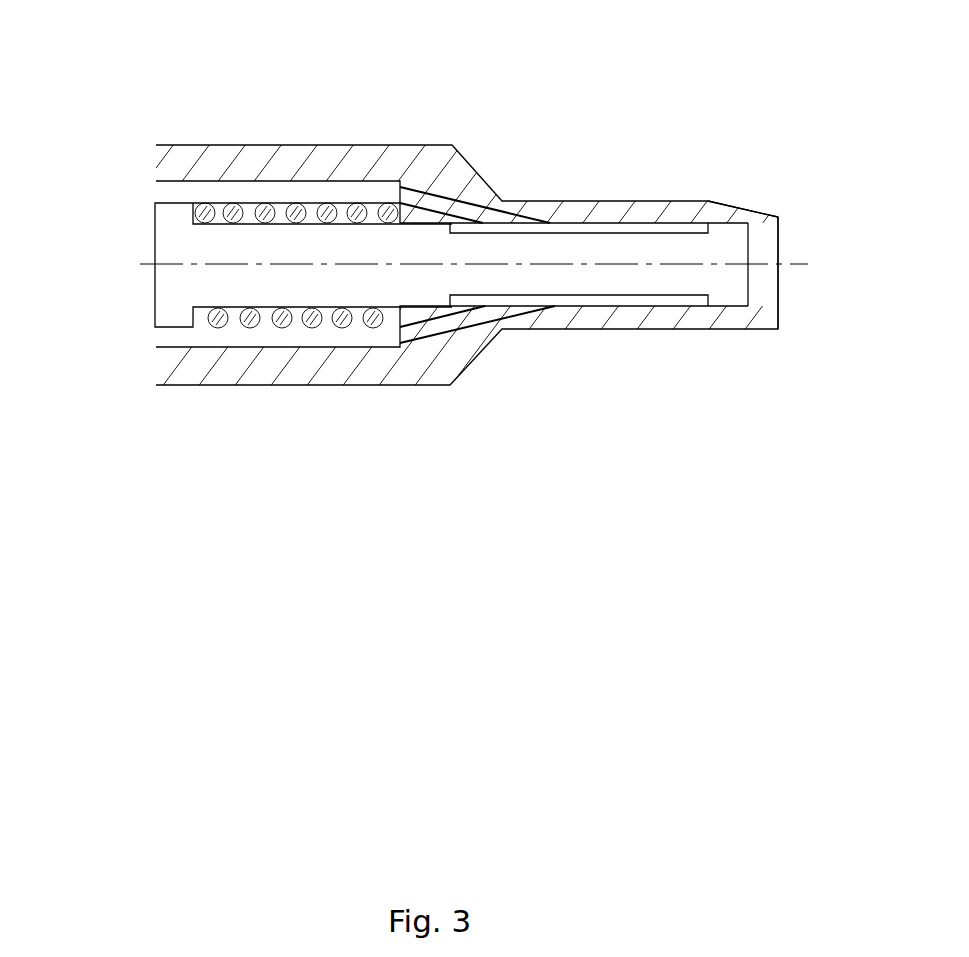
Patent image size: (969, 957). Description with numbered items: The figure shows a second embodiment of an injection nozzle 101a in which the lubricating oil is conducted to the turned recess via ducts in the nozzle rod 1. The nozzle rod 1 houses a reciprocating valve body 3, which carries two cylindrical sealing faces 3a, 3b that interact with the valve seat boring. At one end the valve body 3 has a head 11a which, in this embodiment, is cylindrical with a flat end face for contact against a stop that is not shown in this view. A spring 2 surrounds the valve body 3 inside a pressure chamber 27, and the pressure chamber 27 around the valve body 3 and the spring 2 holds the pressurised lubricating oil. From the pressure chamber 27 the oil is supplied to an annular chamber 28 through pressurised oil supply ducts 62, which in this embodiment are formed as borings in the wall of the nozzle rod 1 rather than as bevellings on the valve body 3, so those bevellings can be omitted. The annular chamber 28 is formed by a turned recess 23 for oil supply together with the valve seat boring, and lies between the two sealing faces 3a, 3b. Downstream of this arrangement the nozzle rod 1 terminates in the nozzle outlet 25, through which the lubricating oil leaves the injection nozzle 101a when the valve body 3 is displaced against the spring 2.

The injection nozzle 101a is at (137, 110).
The nozzle rod 1 is at (460, 178).
The head of valve body 11a is at (168, 215).
The pressure chamber 27 is at (232, 198).
The valve body 3 is at (292, 247).
The pressurised oil supply ducts 62 is at (484, 209).
The turned recess for oil supply 23 is at (593, 235).
The nozzle outlet 25 is at (730, 213).
The spring 2 is at (250, 315).
The cylindrical sealing face on valve body 3a is at (427, 310).
The annular chamber 28 is at (615, 303).
The cylindrical sealing face on valve body 3b is at (728, 308).